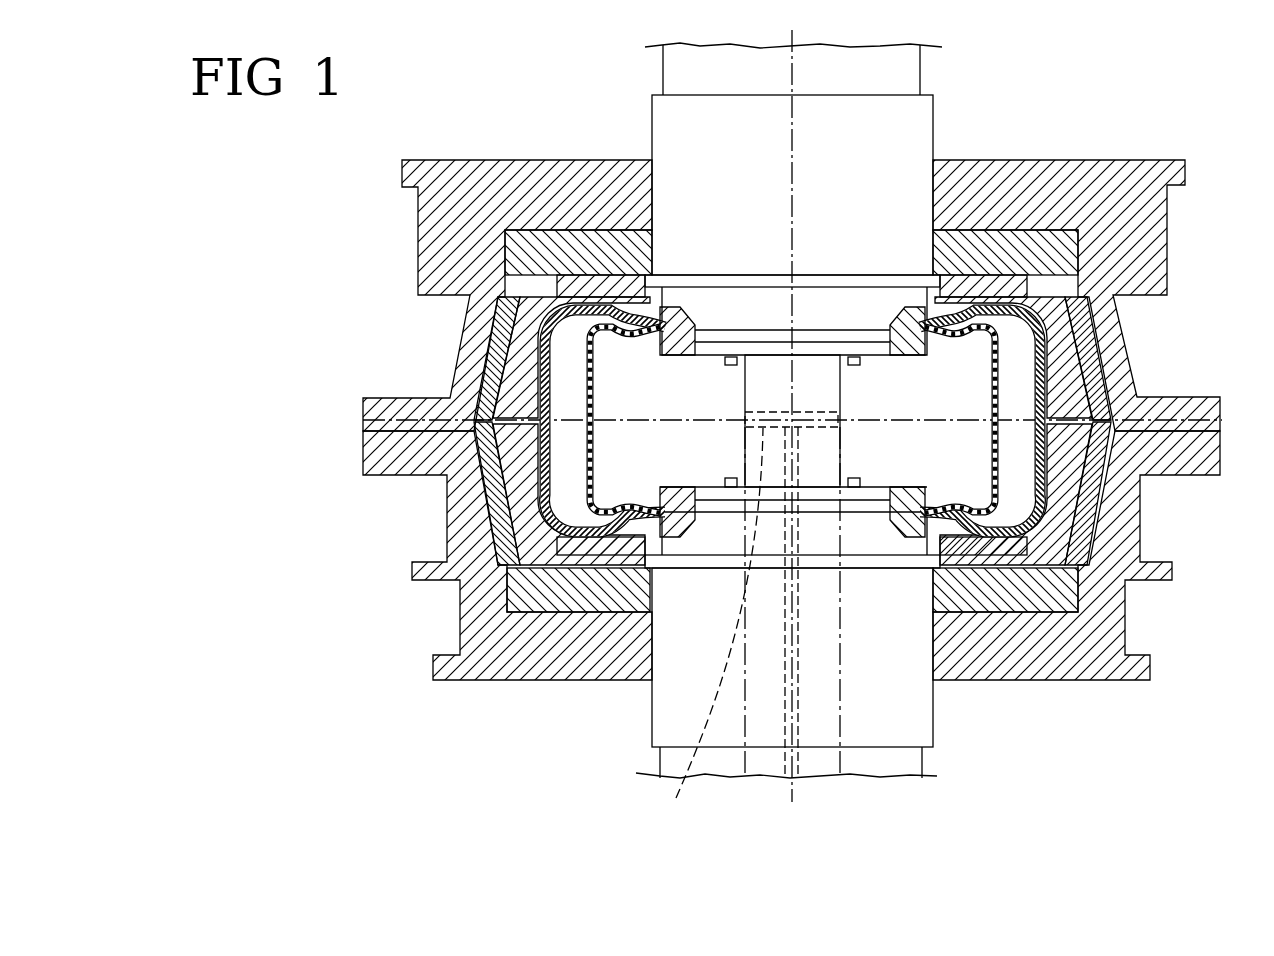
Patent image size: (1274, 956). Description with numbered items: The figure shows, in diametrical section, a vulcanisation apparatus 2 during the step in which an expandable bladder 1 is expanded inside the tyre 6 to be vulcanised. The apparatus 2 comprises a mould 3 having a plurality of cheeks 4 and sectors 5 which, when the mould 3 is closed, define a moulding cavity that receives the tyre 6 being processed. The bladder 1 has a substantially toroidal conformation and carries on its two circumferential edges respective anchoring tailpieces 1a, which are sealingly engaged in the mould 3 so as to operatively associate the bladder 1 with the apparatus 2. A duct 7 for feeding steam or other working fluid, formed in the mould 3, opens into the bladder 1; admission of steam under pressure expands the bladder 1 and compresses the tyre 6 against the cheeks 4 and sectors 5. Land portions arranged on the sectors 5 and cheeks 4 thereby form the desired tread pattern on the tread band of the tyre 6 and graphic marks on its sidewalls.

The expandable bladder 1 is at (1002, 384).
The anchoring tailpieces 1a is at (663, 333).
The vulcanisation apparatus 2 is at (521, 138).
The mould 3 is at (1052, 270).
The cheeks 4 is at (968, 272).
The sectors 5 is at (518, 362).
The tyre 6 is at (559, 522).
The duct 7 is at (713, 624).